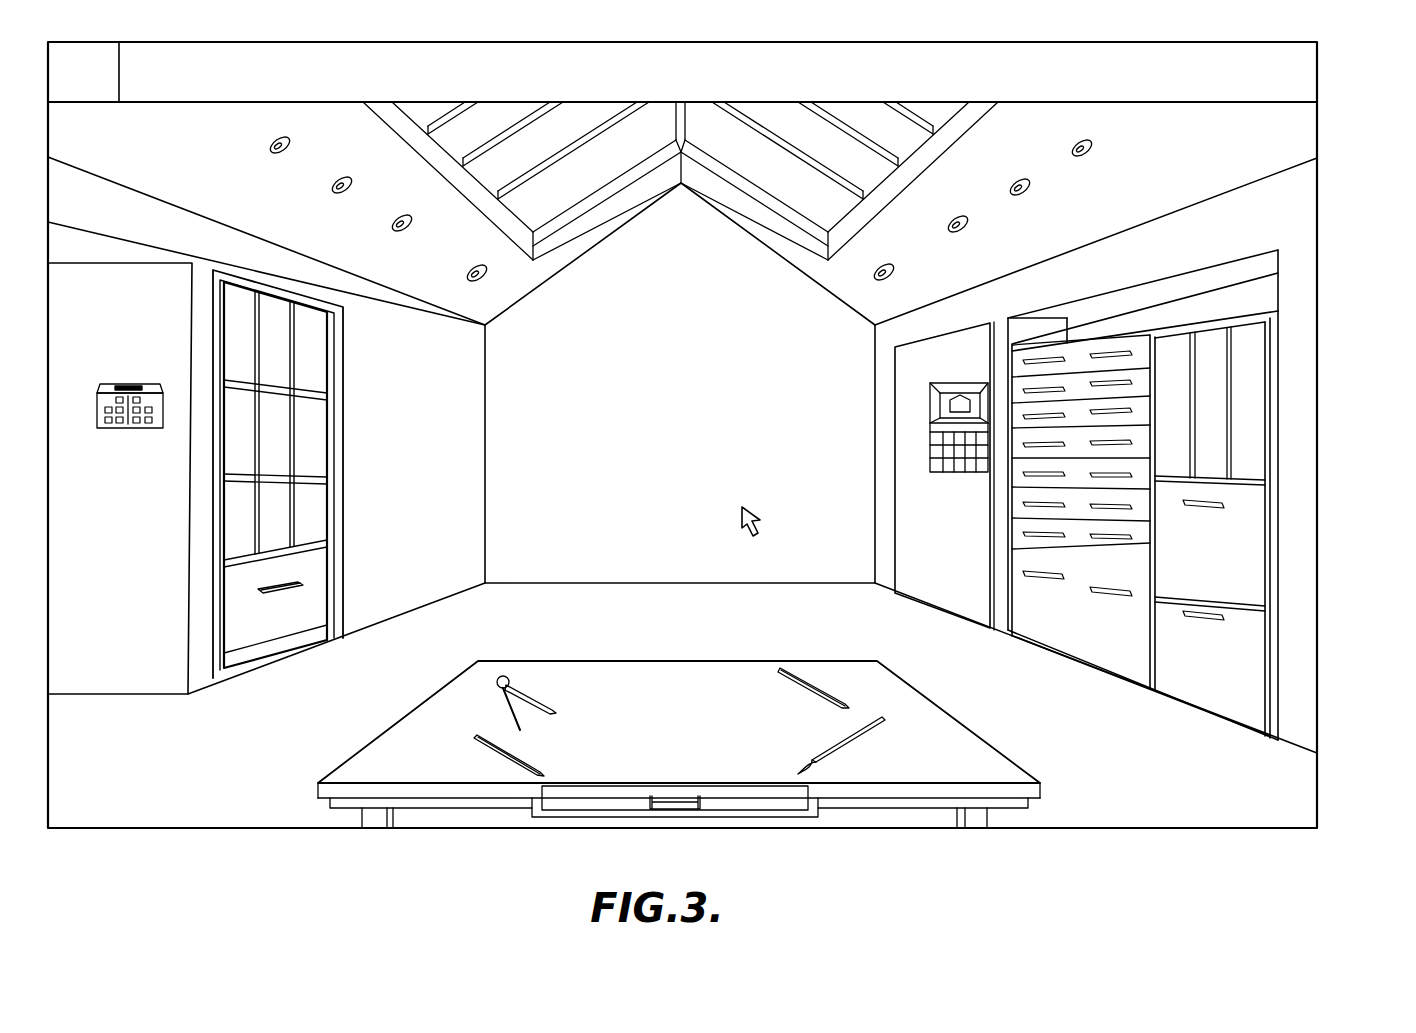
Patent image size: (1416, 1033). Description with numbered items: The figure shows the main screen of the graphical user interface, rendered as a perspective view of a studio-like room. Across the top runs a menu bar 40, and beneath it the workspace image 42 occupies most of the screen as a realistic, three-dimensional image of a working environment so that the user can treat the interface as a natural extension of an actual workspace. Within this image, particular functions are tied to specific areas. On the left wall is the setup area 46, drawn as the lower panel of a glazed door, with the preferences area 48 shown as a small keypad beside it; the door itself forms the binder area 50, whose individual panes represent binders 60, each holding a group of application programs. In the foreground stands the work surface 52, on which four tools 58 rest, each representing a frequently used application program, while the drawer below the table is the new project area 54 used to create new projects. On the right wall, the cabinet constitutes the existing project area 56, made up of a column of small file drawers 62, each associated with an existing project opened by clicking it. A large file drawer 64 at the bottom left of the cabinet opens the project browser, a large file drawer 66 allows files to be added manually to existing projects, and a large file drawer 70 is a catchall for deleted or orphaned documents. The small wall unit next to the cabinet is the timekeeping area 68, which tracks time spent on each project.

The menu bar 40 is at (1298, 76).
The workspace image 42 is at (1326, 400).
The setup area 46 is at (228, 614).
The preferences area 48 is at (126, 432).
The binder area 50 is at (203, 314).
The work surface 52 is at (562, 688).
The new project area 54 is at (588, 802).
The existing project area 56 is at (997, 358).
The tools 58 is at (503, 690).
The binders 60 is at (312, 440).
The small file drawers 62 is at (1010, 502).
The large file drawer 64 is at (1023, 583).
The large file drawer 66 is at (1245, 531).
The timekeeping area 68 is at (930, 424).
The large file drawer 70 is at (1243, 662).